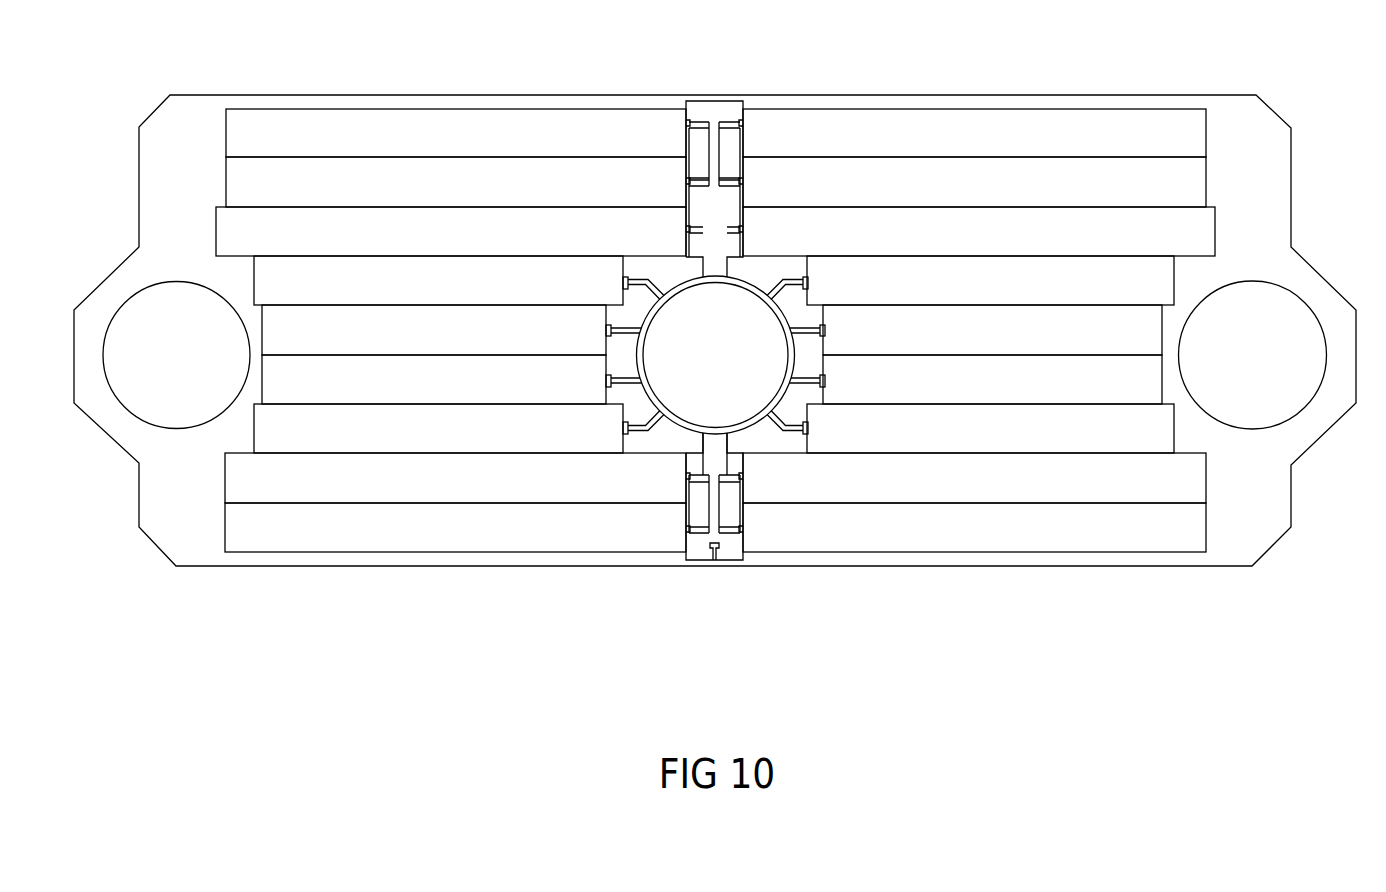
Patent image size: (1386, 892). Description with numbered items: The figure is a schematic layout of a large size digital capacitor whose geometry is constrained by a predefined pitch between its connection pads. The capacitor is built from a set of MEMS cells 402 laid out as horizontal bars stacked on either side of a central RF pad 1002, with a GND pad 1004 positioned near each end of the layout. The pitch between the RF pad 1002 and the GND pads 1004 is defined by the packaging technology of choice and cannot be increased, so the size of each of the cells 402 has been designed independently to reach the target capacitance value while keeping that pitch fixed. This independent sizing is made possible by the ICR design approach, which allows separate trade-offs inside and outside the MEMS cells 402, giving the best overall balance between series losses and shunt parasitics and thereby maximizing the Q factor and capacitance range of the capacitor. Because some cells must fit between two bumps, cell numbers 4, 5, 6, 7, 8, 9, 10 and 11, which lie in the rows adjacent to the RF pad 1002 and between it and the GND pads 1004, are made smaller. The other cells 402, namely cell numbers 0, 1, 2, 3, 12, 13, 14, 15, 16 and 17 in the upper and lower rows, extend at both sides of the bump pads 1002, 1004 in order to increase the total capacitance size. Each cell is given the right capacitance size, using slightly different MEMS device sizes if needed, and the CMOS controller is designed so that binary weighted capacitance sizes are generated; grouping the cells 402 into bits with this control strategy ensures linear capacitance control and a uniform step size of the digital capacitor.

The MEMS cells 402 is at (715, 330).
The cell number 0 is at (463, 540).
The cell number 1 is at (923, 540).
The cell number 2 is at (464, 491).
The cell number 3 is at (926, 491).
The cell number 4 is at (464, 442).
The cell number 5 is at (926, 442).
The cell number 6 is at (464, 392).
The cell number 7 is at (926, 392).
The cell number 8 is at (464, 343).
The cell number 9 is at (929, 343).
The cell number 10 is at (465, 294).
The cell number 11 is at (926, 294).
The cell number 12 is at (465, 244).
The cell number 13 is at (928, 244).
The cell number 14 is at (467, 195).
The cell number 15 is at (930, 195).
The cell number 16 is at (467, 146).
The cell number 17 is at (930, 146).
The RF pad 1002 is at (688, 363).
The GND pad 1004 is at (212, 364).